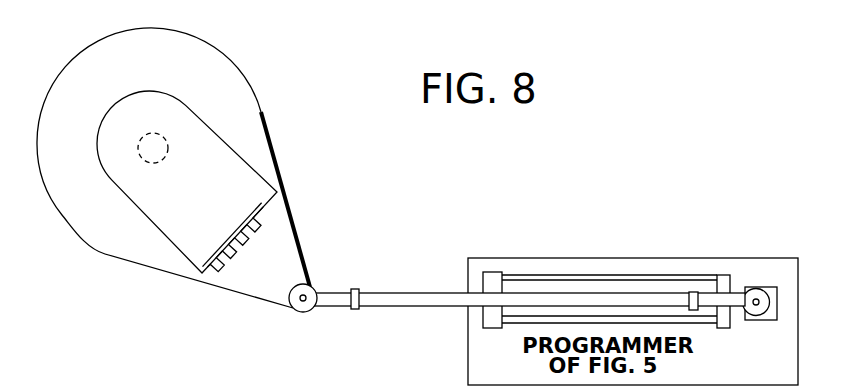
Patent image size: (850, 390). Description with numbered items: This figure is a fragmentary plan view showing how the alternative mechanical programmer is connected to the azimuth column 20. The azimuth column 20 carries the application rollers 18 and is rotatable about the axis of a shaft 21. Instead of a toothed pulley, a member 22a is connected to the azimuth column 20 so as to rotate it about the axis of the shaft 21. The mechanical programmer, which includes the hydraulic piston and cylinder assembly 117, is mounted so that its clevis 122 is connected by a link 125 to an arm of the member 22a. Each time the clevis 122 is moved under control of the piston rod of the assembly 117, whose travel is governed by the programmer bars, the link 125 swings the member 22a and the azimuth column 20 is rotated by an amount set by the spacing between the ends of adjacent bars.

The application rollers 18 is at (223, 221).
The azimuth column 20 is at (258, 174).
The shaft 21 is at (168, 142).
The member 22a is at (292, 212).
The hydraulic piston and cylinder assembly 117 is at (588, 295).
The clevis 122 is at (748, 288).
The link 125 is at (432, 293).